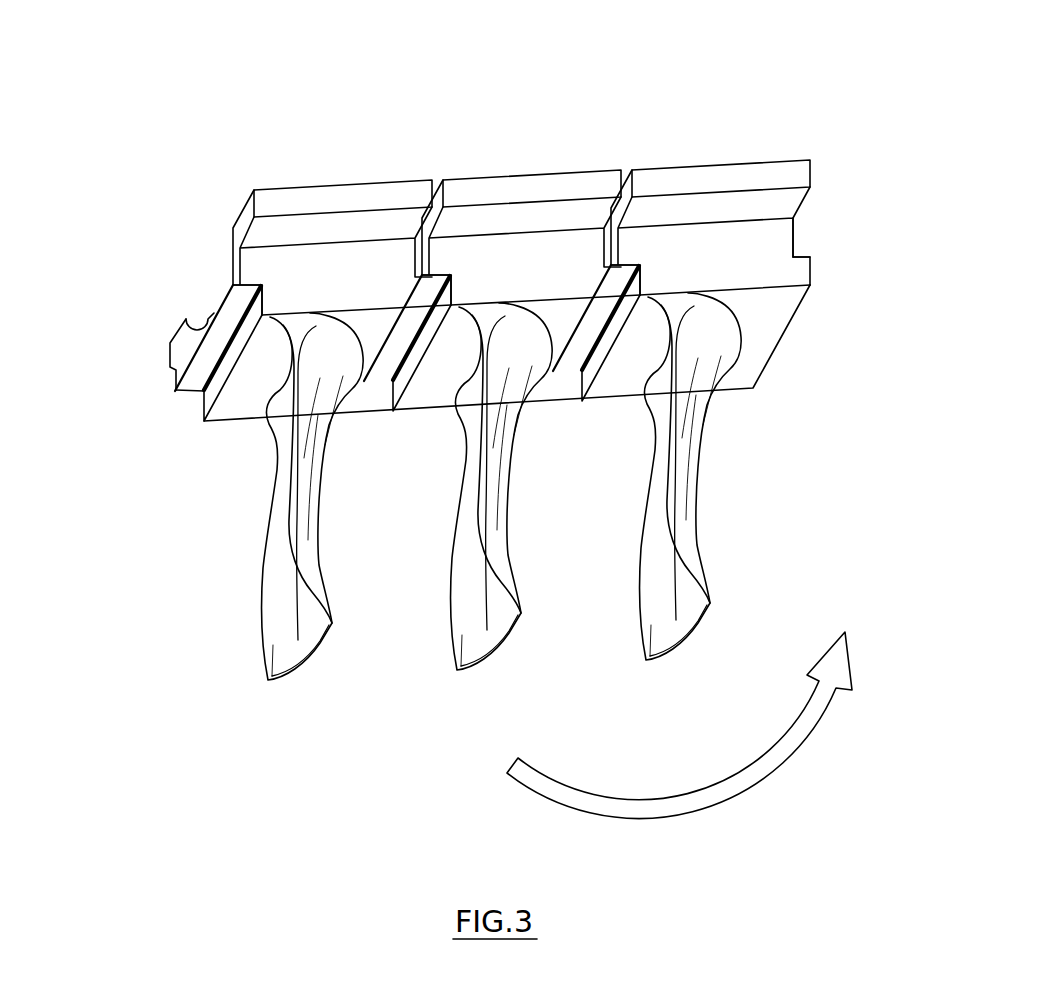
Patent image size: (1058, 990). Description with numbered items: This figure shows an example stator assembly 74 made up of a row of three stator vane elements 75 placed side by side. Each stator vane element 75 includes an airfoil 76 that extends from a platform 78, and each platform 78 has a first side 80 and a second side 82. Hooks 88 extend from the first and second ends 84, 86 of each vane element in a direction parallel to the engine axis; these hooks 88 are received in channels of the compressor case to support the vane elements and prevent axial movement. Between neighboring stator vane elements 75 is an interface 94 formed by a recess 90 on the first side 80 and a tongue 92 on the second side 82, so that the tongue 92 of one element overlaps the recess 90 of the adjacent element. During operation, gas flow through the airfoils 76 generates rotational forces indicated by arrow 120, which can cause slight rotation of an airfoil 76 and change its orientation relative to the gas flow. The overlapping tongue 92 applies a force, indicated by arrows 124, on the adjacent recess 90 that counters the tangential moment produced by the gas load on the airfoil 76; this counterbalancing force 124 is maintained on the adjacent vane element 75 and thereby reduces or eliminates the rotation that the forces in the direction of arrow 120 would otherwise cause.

The stator assembly 74 is at (146, 553).
The stator vane element 75 is at (359, 116).
The airfoil 76 is at (282, 557).
The platform 78 is at (235, 407).
The first side 80 is at (166, 382).
The second side 82 is at (802, 233).
The first end 84 is at (356, 260).
The second end 86 is at (172, 357).
The hook 88 is at (337, 192).
The recess 90 is at (196, 395).
The tongue 92 is at (816, 267).
The interface 94 is at (382, 410).
The arrow indicating rotational forces 120 is at (722, 792).
The arrow indicating counterbalancing force 124 is at (388, 358).